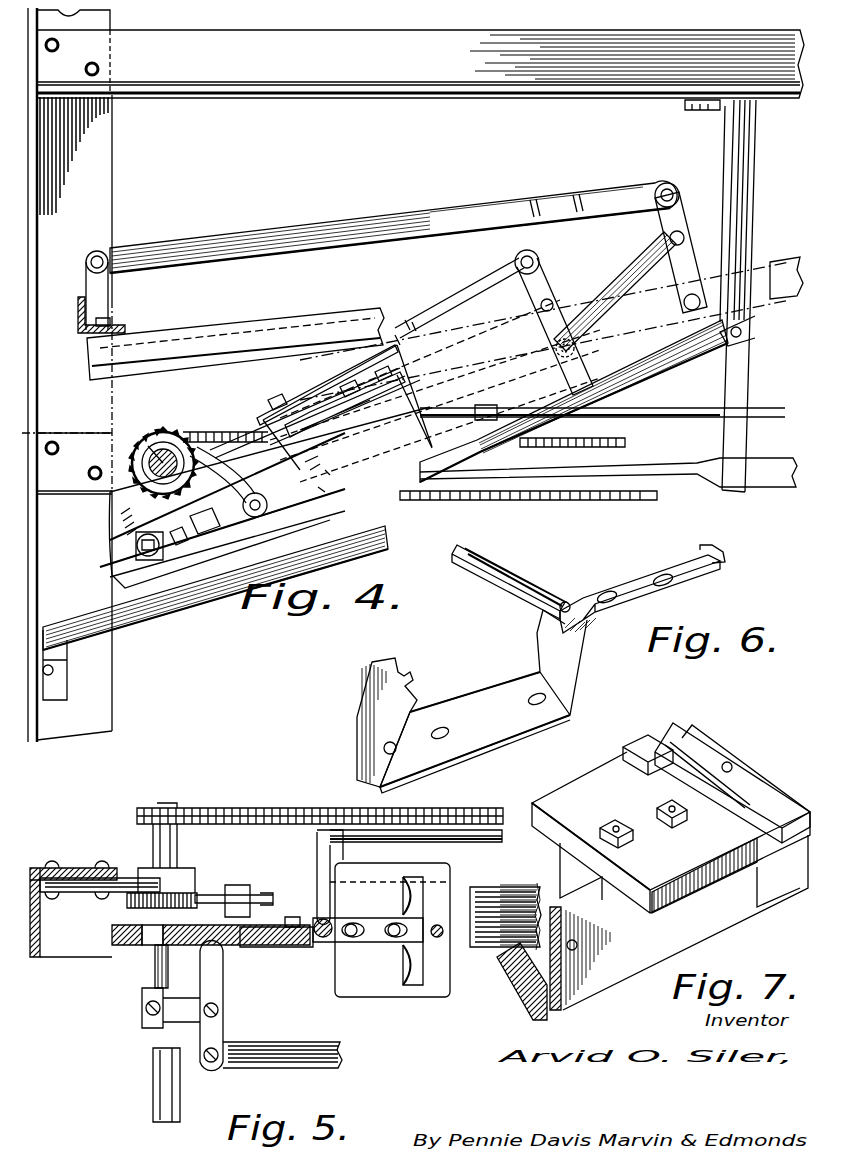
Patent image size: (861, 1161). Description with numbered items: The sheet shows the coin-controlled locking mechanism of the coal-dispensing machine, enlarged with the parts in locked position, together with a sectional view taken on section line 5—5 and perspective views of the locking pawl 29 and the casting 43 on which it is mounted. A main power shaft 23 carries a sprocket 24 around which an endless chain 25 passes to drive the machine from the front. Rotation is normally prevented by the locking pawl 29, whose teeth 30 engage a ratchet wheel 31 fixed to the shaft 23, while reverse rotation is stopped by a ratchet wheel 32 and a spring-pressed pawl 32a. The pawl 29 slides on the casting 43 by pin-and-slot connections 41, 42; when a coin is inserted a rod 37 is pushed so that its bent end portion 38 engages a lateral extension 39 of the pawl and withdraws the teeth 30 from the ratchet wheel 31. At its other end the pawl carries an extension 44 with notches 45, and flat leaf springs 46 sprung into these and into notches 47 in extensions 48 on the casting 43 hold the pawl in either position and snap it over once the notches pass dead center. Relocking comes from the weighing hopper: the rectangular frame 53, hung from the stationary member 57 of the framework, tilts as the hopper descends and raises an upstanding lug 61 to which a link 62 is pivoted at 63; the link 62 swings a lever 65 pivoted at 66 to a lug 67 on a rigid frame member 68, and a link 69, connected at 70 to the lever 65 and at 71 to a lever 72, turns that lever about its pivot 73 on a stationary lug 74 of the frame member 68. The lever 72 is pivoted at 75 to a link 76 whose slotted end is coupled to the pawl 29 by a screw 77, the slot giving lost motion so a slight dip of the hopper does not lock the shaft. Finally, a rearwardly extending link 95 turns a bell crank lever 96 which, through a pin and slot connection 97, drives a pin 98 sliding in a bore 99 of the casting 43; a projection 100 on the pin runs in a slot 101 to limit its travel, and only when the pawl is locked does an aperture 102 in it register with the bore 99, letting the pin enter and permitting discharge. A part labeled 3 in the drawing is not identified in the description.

In FIG. 4, the frame side rail 3 is at (65, 446).
In FIG. 4, the section line 5— 5 is at (414, 388).
In FIG. 4, the main power shaft 23 is at (155, 440).
In FIG. 5, the main power shaft 23 is at (178, 848).
In FIG. 5, the sprocket 24 is at (145, 810).
In FIG. 4, the endless chain 25 is at (635, 500).
In FIG. 5, the endless chain 25 is at (318, 812).
In FIG. 4, the locking pawl 29 is at (140, 518).
In FIG. 6, the locking pawl 29 is at (483, 738).
In FIG. 5, the locking pawl 29 is at (270, 947).
In FIG. 4, the teeth 30 is at (122, 500).
In FIG. 6, the teeth 30 is at (412, 690).
In FIG. 4, the ratchet wheel 31 is at (192, 445).
In FIG. 4, the ratchet wheel 32 is at (176, 425).
In FIG. 5, the ratchet wheel 32 is at (196, 880).
In FIG. 4, the spring-pressed pawl 32a is at (245, 460).
In FIG. 5, the spring-pressed pawl 32a is at (215, 897).
In FIG. 4, the rod 37 is at (688, 418).
In FIG. 5, the rod 37 is at (400, 838).
In FIG. 5, the bent end portion 38 is at (343, 853).
In FIG. 6, the lateral extension 39 is at (528, 580).
In FIG. 5, the lateral extension 39 is at (317, 857).
In FIG. 4, the pin-and-slot connection 41 is at (322, 455).
In FIG. 6, the pin-and-slot connection 41 is at (545, 706).
In FIG. 5, the pin-and-slot connection 41 is at (240, 948).
In FIG. 4, the pin-and-slot connection 42 is at (345, 390).
In FIG. 6, the pin-and-slot connection 42 is at (660, 580).
In FIG. 5, the pin-and-slot connection 42 is at (395, 940).
In FIG. 4, the casting 43 is at (430, 445).
In FIG. 7, the casting 43 is at (612, 952).
In FIG. 5, the casting 43 is at (305, 948).
In FIG. 4, the extension 44 is at (352, 430).
In FIG. 6, the extension 44 is at (635, 607).
In FIG. 5, the extension 44 is at (372, 918).
In FIG. 6, the notches 45 is at (720, 572).
In FIG. 5, the notches 45 is at (428, 940).
In FIG. 4, the flat leaf springs 46 is at (420, 384).
In FIG. 5, the flat leaf springs 46 is at (420, 895).
In FIG. 7, the notches 47 is at (745, 820).
In FIG. 7, the extensions 48 is at (760, 820).
In FIG. 5, the extensions 48 is at (420, 873).
In FIG. 4, the rectangular frame 53 is at (260, 317).
In FIG. 4, the stationary member 57 is at (404, 88).
In FIG. 4, the upstanding lug 61 is at (112, 294).
In FIG. 4, the link 62 is at (328, 228).
In FIG. 4, the pivot 63 is at (110, 252).
In FIG. 4, the lever 65 is at (685, 210).
In FIG. 4, the pivot 66 is at (682, 300).
In FIG. 4, the lug 67 is at (686, 182).
In FIG. 4, the rigid frame member 68 is at (692, 360).
In FIG. 4, the link 69 is at (652, 252).
In FIG. 4, the pivotal connection 70 is at (686, 236).
In FIG. 4, the pivotal connection 71 is at (540, 360).
In FIG. 4, the lever 72 is at (545, 275).
In FIG. 4, the pivot 73 is at (540, 306).
In FIG. 4, the stationary lug 74 is at (556, 348).
In FIG. 4, the pivot 75 is at (527, 255).
In FIG. 4, the link 76 is at (455, 300).
In FIG. 4, the screw 77 is at (285, 392).
In FIG. 5, the screw 77 is at (315, 920).
In FIG. 4, the rearwardly extending link 95 is at (400, 510).
In FIG. 5, the rearwardly extending link 95 is at (340, 1055).
In FIG. 4, the bell crank lever 96 is at (190, 540).
In FIG. 5, the bell crank lever 96 is at (224, 1028).
In FIG. 4, the pin and slot connection 97 is at (138, 548).
In FIG. 5, the pin and slot connection 97 is at (142, 1010).
In FIG. 5, the pin 98 is at (152, 985).
In FIG. 5, the bore 99 is at (152, 972).
In FIG. 5, the projection 100 is at (150, 960).
In FIG. 5, the slot 101 is at (150, 952).
In FIG. 6, the aperture 102 is at (396, 754).
In FIG. 5, the aperture 102 is at (135, 910).